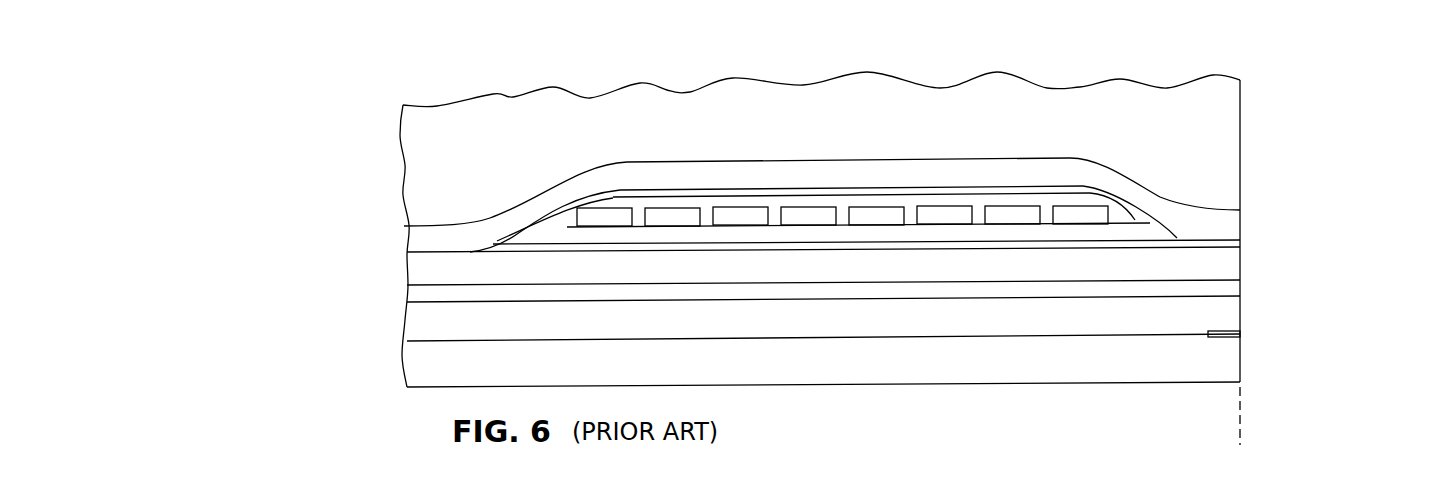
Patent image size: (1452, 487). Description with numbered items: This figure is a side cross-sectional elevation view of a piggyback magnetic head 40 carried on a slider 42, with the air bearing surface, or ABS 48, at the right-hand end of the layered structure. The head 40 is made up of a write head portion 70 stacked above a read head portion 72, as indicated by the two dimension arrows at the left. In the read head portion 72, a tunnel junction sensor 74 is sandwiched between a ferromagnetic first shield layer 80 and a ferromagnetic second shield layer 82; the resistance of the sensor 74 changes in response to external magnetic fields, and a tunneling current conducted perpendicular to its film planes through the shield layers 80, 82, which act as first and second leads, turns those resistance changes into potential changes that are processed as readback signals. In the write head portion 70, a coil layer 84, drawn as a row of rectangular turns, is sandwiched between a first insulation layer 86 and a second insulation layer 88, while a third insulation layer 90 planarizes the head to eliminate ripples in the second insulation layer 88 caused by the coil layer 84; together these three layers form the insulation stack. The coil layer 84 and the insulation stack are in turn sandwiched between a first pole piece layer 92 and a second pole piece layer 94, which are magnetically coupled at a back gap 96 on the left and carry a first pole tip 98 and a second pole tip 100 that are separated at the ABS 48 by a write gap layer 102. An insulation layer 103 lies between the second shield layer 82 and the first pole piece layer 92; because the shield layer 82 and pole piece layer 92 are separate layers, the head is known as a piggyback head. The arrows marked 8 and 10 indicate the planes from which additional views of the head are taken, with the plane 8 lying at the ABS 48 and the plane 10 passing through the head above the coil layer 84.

The piggyback magnetic head 40 is at (380, 113).
The slider 42 is at (1224, 109).
The air bearing surface (ABS) 48 is at (1240, 435).
The write head portion 70 is at (400, 285).
The read head portion 72 is at (393, 388).
The tunnel junction sensor 74 is at (1240, 334).
The first shield layer 80 is at (998, 368).
The second shield layer 82 is at (1108, 313).
The coil layer 84 is at (872, 210).
The first insulation layer 86 is at (783, 240).
The second insulation layer 88 is at (1124, 212).
The third insulation layer 90 is at (645, 192).
The first pole piece layer 92 is at (1157, 267).
The second pole piece layer 94 is at (1015, 168).
The back gap 96 is at (448, 250).
The first pole tip 98 is at (1240, 268).
The second pole tip 100 is at (1233, 221).
The write gap layer 102 is at (1240, 240).
The insulation layer 103 is at (1060, 288).
The section line 8- 8 is at (1378, 80).
The section line 10- 10 is at (462, 78).